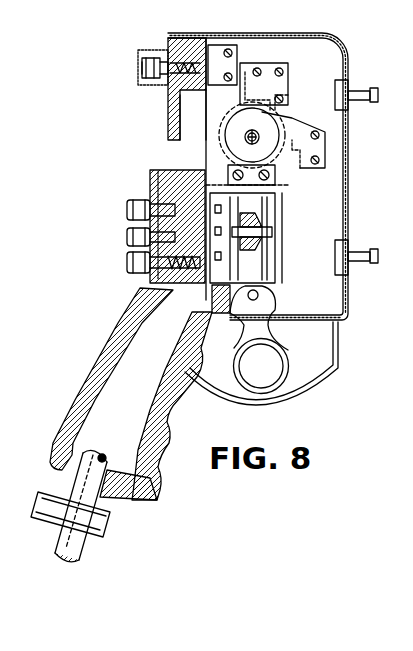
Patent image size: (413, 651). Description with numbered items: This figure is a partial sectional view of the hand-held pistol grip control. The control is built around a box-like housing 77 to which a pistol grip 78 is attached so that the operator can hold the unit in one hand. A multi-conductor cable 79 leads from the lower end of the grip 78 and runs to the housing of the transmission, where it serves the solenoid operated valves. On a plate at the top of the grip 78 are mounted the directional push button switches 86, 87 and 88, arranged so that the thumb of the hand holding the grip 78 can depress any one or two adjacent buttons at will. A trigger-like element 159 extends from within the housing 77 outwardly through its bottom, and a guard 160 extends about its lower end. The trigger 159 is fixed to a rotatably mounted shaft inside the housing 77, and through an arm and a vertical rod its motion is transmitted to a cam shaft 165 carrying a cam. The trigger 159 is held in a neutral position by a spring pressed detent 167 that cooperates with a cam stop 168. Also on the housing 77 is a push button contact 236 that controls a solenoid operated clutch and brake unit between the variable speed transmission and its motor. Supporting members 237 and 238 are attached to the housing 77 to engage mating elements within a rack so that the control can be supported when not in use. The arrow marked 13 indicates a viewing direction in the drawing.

The direction arrow 13 is at (210, 152).
The box-like housing 77 is at (352, 200).
The pistol grip 78 is at (126, 338).
The multi-conductor cable 79 is at (45, 528).
The push button switch 86 is at (137, 200).
The push button switch 87 is at (142, 270).
The push button switch 88 is at (132, 233).
The trigger-like element 159 is at (277, 387).
The guard 160 is at (327, 378).
The cam shaft 165 is at (253, 130).
The spring pressed detent 167 is at (272, 167).
The cam stop 168 is at (268, 128).
The push button contact 236 is at (0, 50).
The supporting member 237 is at (362, 88).
The supporting member 238 is at (362, 249).